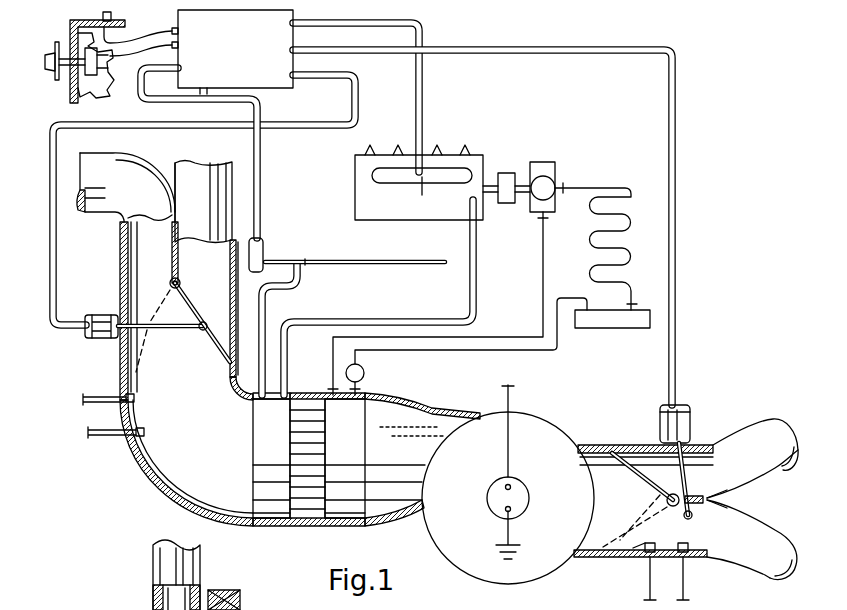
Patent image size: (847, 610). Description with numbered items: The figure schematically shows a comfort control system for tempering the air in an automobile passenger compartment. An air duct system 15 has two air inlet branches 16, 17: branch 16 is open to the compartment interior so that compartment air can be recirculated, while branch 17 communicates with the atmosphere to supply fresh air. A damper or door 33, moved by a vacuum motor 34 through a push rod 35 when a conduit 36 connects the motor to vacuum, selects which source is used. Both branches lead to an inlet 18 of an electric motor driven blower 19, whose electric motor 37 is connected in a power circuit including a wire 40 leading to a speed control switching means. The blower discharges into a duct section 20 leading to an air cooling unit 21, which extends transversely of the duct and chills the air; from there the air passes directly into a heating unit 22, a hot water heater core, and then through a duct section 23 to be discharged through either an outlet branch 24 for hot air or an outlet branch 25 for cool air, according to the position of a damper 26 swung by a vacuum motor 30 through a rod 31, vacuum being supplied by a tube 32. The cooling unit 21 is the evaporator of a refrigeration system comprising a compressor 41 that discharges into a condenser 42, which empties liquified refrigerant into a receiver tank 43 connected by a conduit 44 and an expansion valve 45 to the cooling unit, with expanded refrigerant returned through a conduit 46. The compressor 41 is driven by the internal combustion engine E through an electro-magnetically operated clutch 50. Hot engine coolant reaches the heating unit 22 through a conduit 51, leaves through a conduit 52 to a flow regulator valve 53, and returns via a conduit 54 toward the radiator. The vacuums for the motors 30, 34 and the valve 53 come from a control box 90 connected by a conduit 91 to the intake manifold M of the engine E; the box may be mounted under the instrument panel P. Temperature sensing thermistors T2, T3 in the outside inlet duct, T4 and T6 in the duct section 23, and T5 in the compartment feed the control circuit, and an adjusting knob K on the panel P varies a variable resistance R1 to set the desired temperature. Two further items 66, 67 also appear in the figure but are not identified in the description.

The air duct system 15 is at (135, 452).
The air inlet branch 16 is at (773, 457).
The air inlet branch 17 is at (739, 506).
The inlet 18 is at (595, 497).
The electric motor driven blower 19 is at (568, 506).
The duct section 20 is at (425, 456).
The air cooling unit 21 is at (355, 440).
The heating unit 22 is at (284, 440).
The duct section 23 is at (229, 479).
The outlet branch 24 is at (133, 170).
The outlet branch 25 is at (203, 173).
The damper 26 is at (222, 352).
The vacuum motor 30 is at (96, 313).
The rod 31 is at (143, 318).
The tube 32 is at (58, 240).
The damper or door 33 is at (632, 525).
The vacuum motor 34 is at (692, 418).
The push rod 35 is at (676, 468).
The conduit 36 is at (667, 91).
The electric motor 37 is at (487, 498).
The wire 40 is at (510, 457).
The compressor 41 is at (543, 162).
The condenser 42 is at (631, 190).
The receiver tank 43 is at (630, 330).
The conduit 44 is at (487, 352).
The expansion valve 45 is at (365, 373).
The conduit 46 is at (510, 337).
The electro-magnetically operated clutch 50 is at (505, 173).
The conduit 51 is at (432, 318).
The conduit 52 is at (305, 287).
The flow regulator valve 53 is at (264, 244).
The conduit 54 is at (386, 265).
The seal 66 is at (150, 606).
The conduit 67 is at (261, 147).
The control box 90 is at (200, 72).
The conduit 91 is at (423, 97).
The internal combustion engine E is at (355, 190).
The intake manifold M is at (420, 197).
The adjusting knob K is at (45, 62).
The instrument panel P is at (77, 27).
The variable resistance R1 is at (73, 76).
The temperature sensing thermistor T2 is at (685, 543).
The temperature sensing thermistor T3 is at (643, 553).
The thermistor T4 is at (135, 400).
The thermistor T5 is at (112, 16).
The thermistor T6 is at (145, 432).